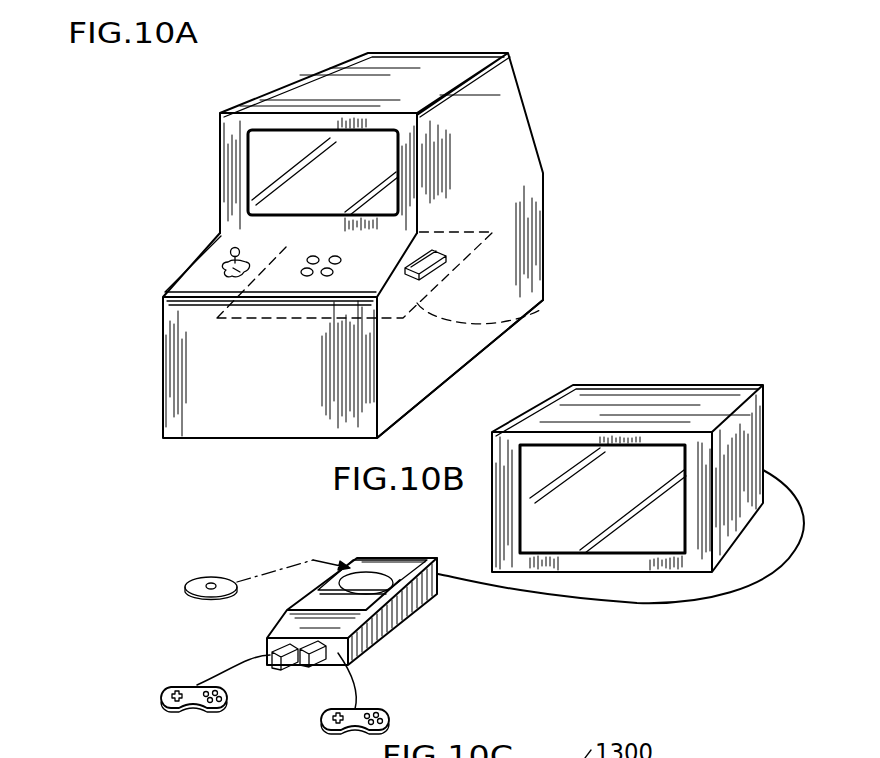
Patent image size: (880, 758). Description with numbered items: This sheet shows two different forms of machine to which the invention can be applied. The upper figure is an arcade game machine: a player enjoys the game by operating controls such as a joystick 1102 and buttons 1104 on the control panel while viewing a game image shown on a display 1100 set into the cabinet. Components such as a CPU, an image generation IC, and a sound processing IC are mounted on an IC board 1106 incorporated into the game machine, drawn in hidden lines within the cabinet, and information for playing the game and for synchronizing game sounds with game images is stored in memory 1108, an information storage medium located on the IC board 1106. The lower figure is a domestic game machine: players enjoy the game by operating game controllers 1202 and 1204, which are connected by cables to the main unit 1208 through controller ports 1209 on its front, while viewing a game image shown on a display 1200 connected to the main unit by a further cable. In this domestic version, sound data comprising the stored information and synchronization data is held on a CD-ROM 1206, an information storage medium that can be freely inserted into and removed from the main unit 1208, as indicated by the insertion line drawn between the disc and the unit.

In FIG. 10A, the display 1100 is at (273, 163).
In FIG. 10A, the joystick 1102 is at (227, 257).
In FIG. 10A, the buttons 1104 is at (317, 272).
In FIG. 10A, the IC board 1106 is at (480, 347).
In FIG. 10A, the memory 1108 is at (440, 263).
In FIG. 10B, the display 1200 is at (553, 515).
In FIG. 10B, the game controller 1202 is at (168, 685).
In FIG. 10B, the game controller 1204 is at (392, 718).
In FIG. 10B, the CD-ROM 1206 is at (212, 577).
In FIG. 10B, the game console 1208 is at (278, 635).
In FIG. 10B, the controller ports 1209 is at (302, 668).